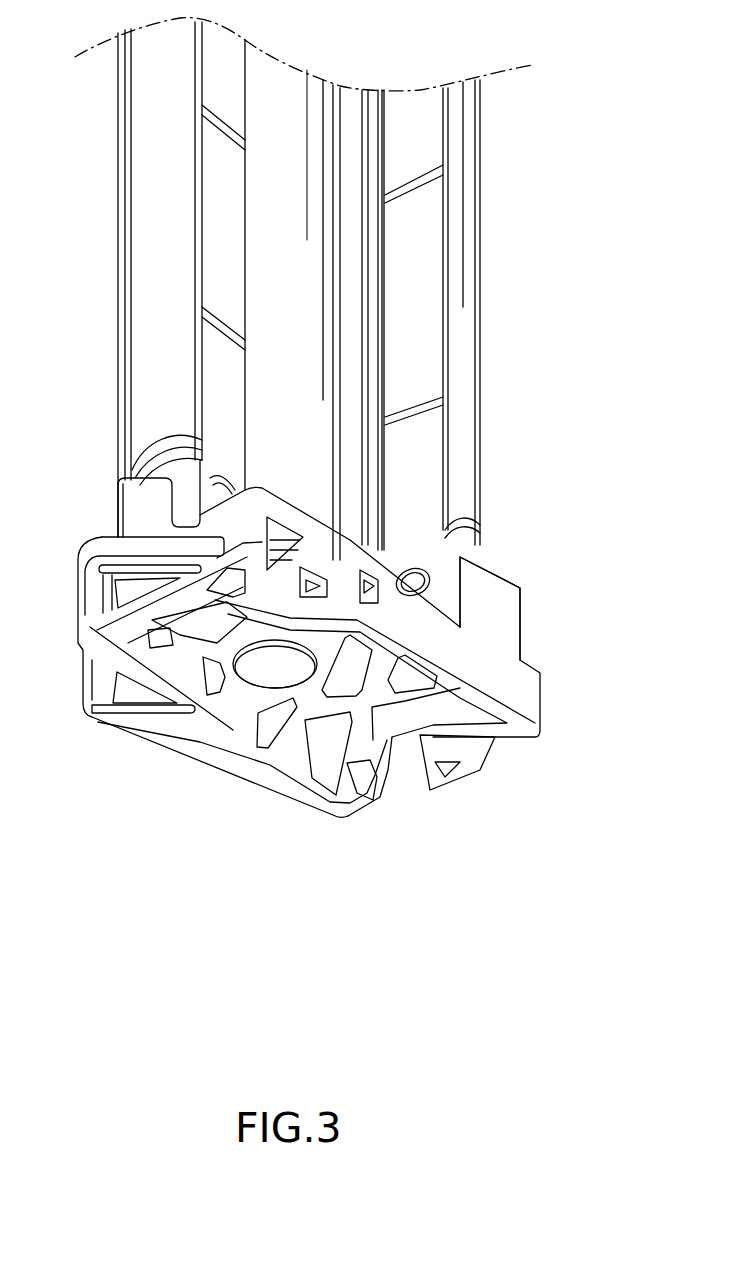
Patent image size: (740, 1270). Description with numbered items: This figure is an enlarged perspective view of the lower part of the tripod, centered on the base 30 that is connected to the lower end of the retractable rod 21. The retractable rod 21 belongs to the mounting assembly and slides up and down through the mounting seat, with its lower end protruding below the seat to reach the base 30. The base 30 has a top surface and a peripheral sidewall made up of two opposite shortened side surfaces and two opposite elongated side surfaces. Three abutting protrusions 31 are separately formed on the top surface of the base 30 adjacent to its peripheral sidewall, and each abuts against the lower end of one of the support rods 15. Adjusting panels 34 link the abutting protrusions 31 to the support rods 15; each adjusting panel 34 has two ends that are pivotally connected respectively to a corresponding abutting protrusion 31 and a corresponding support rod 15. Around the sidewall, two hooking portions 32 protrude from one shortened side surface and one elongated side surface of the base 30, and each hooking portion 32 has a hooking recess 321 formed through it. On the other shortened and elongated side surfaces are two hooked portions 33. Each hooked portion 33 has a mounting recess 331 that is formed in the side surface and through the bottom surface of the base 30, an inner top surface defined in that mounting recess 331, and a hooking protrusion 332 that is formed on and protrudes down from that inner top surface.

The retractable rod 21 is at (299, 90).
The support rods 15 is at (472, 165).
The adjusting panels 34 is at (433, 300).
The base 30 is at (555, 630).
The abutting protrusions 31 is at (490, 585).
The hooking portions 32 is at (102, 548).
The hooking recess 321 is at (135, 692).
The hooked portions 33 is at (304, 620).
The mounting recess 331 is at (400, 790).
The hooking protrusion 332 is at (460, 775).